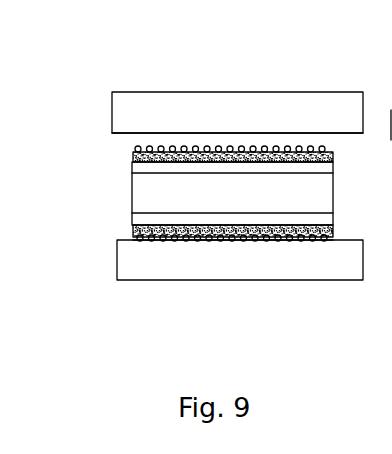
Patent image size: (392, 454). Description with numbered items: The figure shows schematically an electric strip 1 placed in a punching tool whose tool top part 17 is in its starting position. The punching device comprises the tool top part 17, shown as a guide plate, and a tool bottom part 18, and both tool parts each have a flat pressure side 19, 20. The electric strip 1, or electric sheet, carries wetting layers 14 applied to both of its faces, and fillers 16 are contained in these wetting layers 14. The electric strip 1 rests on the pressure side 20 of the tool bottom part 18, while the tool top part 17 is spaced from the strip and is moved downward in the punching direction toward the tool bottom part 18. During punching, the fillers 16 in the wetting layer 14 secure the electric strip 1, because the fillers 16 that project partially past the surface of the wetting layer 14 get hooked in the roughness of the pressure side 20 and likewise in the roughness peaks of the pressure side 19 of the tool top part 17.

The electric strip 1 is at (153, 197).
The wetting layer 14 is at (132, 157).
The fillers 16 is at (142, 150).
The tool top part 17 is at (245, 113).
The tool bottom part 18 is at (316, 263).
The pressure side 19 is at (161, 131).
The pressure side 20 is at (210, 242).